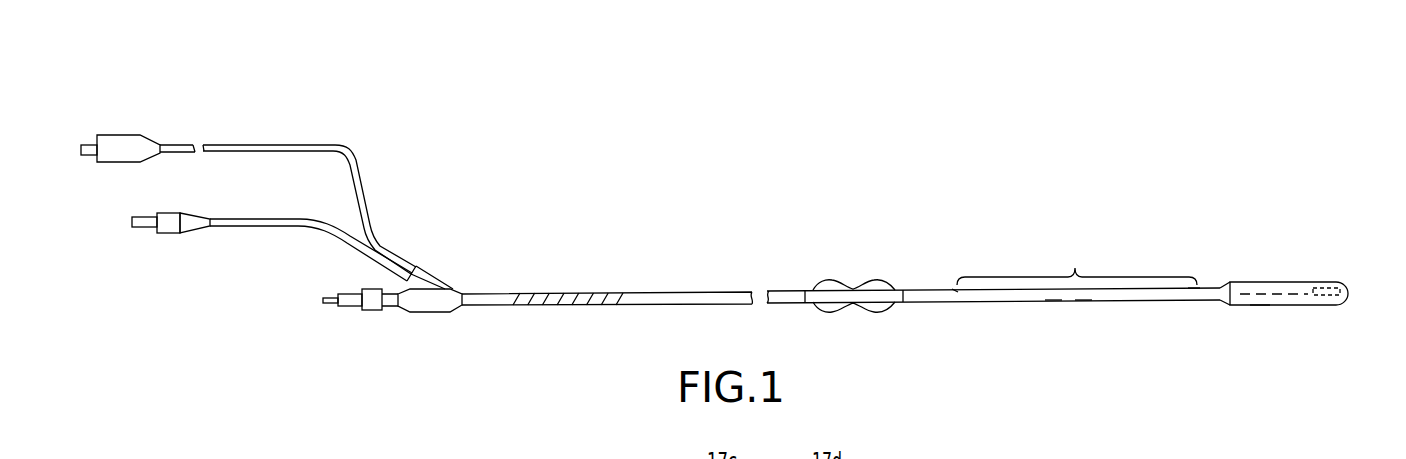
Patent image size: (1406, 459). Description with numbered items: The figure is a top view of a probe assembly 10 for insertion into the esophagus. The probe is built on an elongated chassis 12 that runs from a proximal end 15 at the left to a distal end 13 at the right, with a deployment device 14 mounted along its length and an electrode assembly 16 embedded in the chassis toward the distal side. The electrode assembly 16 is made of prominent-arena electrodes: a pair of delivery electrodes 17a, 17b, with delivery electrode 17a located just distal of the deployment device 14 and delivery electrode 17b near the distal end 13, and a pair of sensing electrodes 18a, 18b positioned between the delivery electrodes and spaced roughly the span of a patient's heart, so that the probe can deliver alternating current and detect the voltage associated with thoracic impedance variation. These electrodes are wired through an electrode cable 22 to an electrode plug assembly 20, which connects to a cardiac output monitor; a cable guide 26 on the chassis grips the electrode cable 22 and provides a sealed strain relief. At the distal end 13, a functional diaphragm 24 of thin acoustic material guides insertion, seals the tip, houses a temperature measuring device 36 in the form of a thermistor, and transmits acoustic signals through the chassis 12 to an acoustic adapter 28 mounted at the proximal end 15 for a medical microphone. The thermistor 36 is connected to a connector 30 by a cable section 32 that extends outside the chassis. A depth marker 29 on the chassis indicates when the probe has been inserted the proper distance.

The probe assembly 10 is at (647, 185).
The chassis 12 is at (675, 293).
The distal end 13 is at (1262, 324).
The deployment device 14 is at (840, 281).
The proximal end 15 is at (438, 249).
The electrode assembly 16 is at (1077, 260).
The delivery electrode 17a is at (955, 290).
The delivery electrode 17b is at (1198, 289).
The sensing electrode 18a is at (1053, 300).
The sensing electrode 18b is at (1087, 306).
The electrode plug assembly 20 is at (120, 135).
The electrode cable 22 is at (290, 145).
The functional diaphragm 24 is at (1348, 282).
The cable guide 26 is at (435, 312).
The acoustic adapter 28 is at (372, 310).
The depth marker 29 is at (573, 305).
The connector 30 is at (170, 237).
The cable section 32 is at (280, 225).
The temperature measuring device 36 is at (1333, 297).